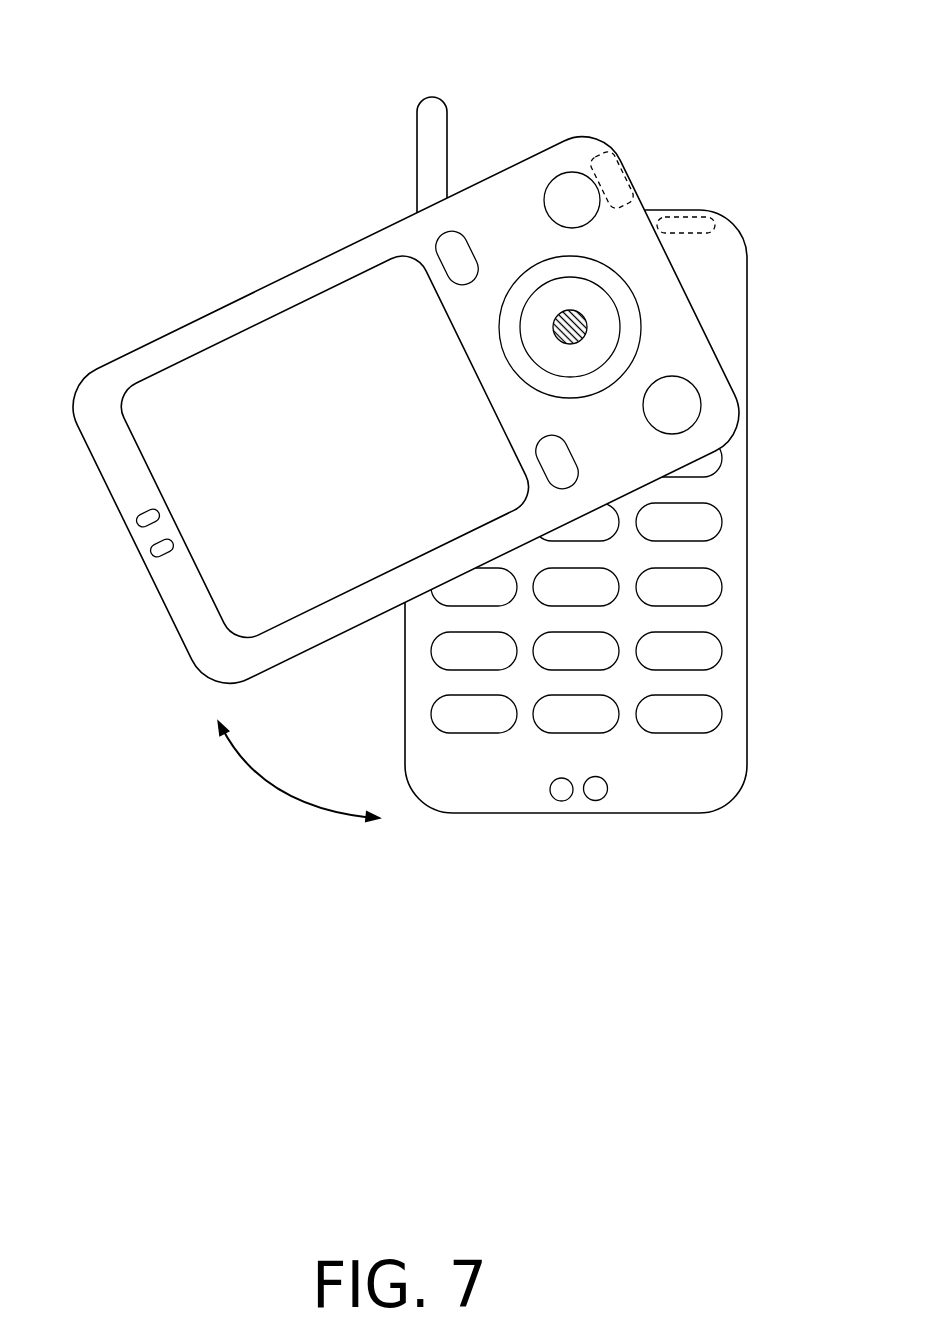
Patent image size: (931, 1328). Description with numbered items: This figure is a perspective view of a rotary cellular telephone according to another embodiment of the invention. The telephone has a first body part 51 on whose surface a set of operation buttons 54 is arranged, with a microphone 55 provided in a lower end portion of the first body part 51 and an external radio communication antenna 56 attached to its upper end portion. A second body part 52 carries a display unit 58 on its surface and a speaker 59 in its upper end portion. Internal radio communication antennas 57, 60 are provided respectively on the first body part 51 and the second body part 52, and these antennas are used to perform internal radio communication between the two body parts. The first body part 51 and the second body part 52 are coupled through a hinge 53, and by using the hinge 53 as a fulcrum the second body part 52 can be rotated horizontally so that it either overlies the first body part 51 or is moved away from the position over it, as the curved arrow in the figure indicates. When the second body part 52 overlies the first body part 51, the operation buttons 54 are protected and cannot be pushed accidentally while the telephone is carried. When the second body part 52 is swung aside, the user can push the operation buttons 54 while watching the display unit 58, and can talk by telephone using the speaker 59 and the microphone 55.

The first body part 51 is at (747, 605).
The second body part 52 is at (318, 262).
The hinge 53 is at (588, 327).
The set of operation buttons 54 is at (723, 710).
The microphone 55 is at (596, 801).
The external radio communication antenna 56 is at (432, 93).
The internal radio communication antenna 57 is at (703, 206).
The display unit 58 is at (233, 333).
The speaker 59 is at (127, 526).
The internal radio communication antenna 60 is at (625, 157).